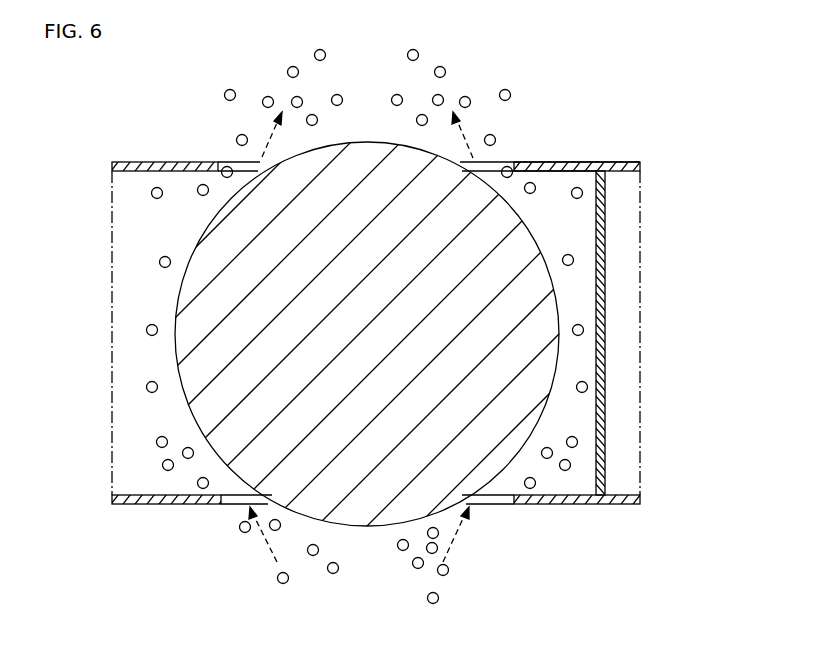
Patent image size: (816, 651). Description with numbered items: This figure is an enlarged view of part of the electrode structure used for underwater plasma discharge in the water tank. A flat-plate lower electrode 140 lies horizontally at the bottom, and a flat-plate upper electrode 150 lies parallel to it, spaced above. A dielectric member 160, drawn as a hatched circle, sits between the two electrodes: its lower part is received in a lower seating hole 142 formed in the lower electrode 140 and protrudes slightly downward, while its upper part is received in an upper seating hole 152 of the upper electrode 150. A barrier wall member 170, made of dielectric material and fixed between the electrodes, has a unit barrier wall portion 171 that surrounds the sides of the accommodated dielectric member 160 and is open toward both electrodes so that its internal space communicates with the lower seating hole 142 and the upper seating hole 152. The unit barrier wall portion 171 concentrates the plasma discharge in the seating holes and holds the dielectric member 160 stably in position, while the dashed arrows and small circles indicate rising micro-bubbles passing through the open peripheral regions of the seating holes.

The lower electrode 140 is at (197, 503).
The lower seating hole 142 is at (497, 503).
The upper electrode 150 is at (161, 167).
The upper seating hole 152 is at (257, 168).
The dielectric member 160 is at (183, 380).
The barrier wall member 170 is at (603, 275).
The unit barrier wall portion 171 is at (550, 212).